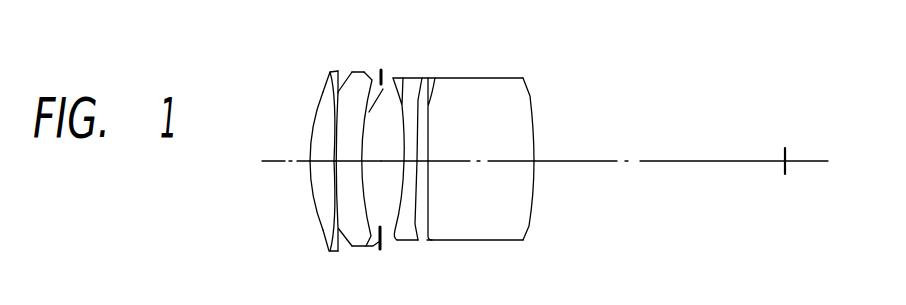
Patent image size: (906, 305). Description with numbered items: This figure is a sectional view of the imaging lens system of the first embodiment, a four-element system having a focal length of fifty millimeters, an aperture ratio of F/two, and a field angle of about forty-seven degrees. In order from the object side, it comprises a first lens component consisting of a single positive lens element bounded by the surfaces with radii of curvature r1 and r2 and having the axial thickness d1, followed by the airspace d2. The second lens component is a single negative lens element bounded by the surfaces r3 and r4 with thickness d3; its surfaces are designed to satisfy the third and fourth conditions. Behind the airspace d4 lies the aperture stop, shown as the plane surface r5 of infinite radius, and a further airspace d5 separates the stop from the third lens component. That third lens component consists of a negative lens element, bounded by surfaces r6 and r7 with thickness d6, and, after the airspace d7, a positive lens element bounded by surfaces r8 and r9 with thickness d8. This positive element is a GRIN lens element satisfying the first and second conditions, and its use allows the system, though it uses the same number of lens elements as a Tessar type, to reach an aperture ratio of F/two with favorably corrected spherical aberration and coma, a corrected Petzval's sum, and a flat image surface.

The radius of curvature of first lens surface r1 is at (321, 92).
The radius of curvature of second lens surface r2 is at (326, 82).
The radius of curvature of third lens surface r3 is at (346, 80).
The radius of curvature of fourth lens surface r4 is at (368, 80).
The aperture stop r5 is at (382, 72).
The radius of curvature of sixth lens surface r6 is at (408, 78).
The radius of curvature of seventh lens surface r7 is at (420, 78).
The radius of curvature of eighth lens surface r8 is at (437, 78).
The radius of curvature of ninth lens surface r9 is at (530, 97).
The thickness of first lens element d1 is at (326, 172).
The airspace between first and second lens components d2 is at (336, 186).
The thickness of second lens element d3 is at (363, 192).
The airspace between second lens component and stop d4 is at (364, 195).
The airspace between stop and third lens component d5 is at (393, 170).
The thickness of negative lens element of third component d6 is at (418, 240).
The airspace between negative and positive elements of third component d7 is at (430, 178).
The thickness of GRIN lens element d8 is at (503, 165).